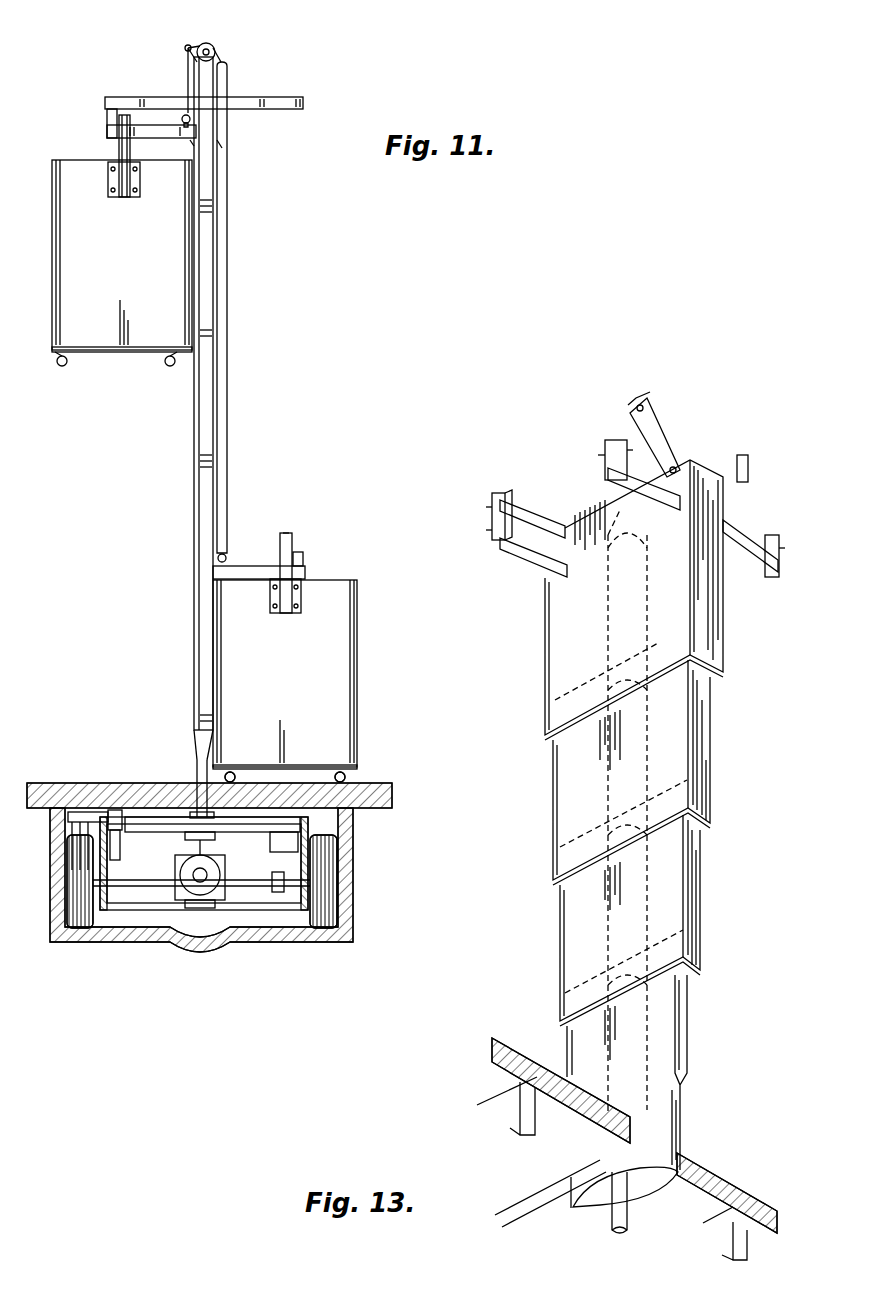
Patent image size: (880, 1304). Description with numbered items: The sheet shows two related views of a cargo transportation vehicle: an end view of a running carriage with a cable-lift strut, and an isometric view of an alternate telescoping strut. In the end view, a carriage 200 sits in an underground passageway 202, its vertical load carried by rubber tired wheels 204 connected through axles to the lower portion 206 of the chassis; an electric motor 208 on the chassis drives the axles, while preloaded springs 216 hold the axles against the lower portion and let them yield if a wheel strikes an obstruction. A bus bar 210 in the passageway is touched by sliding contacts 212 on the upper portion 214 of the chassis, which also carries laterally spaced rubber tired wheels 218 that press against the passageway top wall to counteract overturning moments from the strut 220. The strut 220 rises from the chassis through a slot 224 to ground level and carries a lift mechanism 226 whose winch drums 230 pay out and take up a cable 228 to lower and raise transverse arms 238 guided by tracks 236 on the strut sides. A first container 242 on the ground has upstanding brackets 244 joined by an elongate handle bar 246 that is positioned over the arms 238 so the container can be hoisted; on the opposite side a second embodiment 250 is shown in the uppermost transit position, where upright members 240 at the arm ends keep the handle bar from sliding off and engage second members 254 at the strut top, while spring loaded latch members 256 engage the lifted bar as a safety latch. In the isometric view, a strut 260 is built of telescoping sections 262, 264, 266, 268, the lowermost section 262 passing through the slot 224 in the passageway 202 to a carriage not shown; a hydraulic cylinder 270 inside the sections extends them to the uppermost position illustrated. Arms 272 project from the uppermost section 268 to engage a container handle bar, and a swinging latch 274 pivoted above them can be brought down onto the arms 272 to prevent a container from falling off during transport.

In FIG. 11, the carriage 200 is at (245, 925).
In FIG. 11, the underground passageway 202 is at (340, 826).
In FIG. 13, the underground passageway 202 is at (700, 1200).
In FIG. 11, the rubber tired wheels 204 is at (336, 858).
In FIG. 11, the lower portion of the carriage chassis 206 is at (120, 915).
In FIG. 11, the electric motor 208 is at (182, 885).
In FIG. 11, the bus bar 210 is at (85, 783).
In FIG. 11, the sliding contacts 212 is at (62, 816).
In FIG. 11, the upper portion of the chassis 214 is at (158, 834).
In FIG. 11, the springs 216 is at (95, 882).
In FIG. 11, the laterally spaced rubber tired wheels 218 is at (136, 783).
In FIG. 11, the strut 220 is at (200, 518).
In FIG. 11, the slot 224 is at (196, 788).
In FIG. 13, the slot 224 is at (528, 1206).
In FIG. 11, the lift mechanism 226 is at (250, 60).
In FIG. 11, the cable 228 is at (228, 195).
In FIG. 11, the winch drums 230 is at (214, 44).
In FIG. 11, the tracks 236 is at (135, 138).
In FIG. 11, the transverse arms 238 is at (250, 566).
In FIG. 11, the upright members 240 is at (107, 115).
In FIG. 11, the first container 242 is at (308, 680).
In FIG. 11, the upstanding brackets 244 is at (292, 575).
In FIG. 11, the elongate handle bar 246 is at (119, 125).
In FIG. 11, the second embodiment container 250 is at (138, 268).
In FIG. 11, the second members 254 is at (160, 97).
In FIG. 11, the latch members 256 is at (222, 145).
In FIG. 13, the strut 260 is at (730, 724).
In FIG. 13, the lowermost telescoping section 262 is at (690, 992).
In FIG. 13, the telescoping section 264 is at (706, 883).
In FIG. 13, the telescoping section 266 is at (712, 778).
In FIG. 13, the uppermost telescoping section 268 is at (723, 600).
In FIG. 13, the hydraulic cylinder 270 is at (610, 778).
In FIG. 13, the arms 272 is at (522, 560).
In FIG. 13, the swinging latch 274 is at (660, 435).